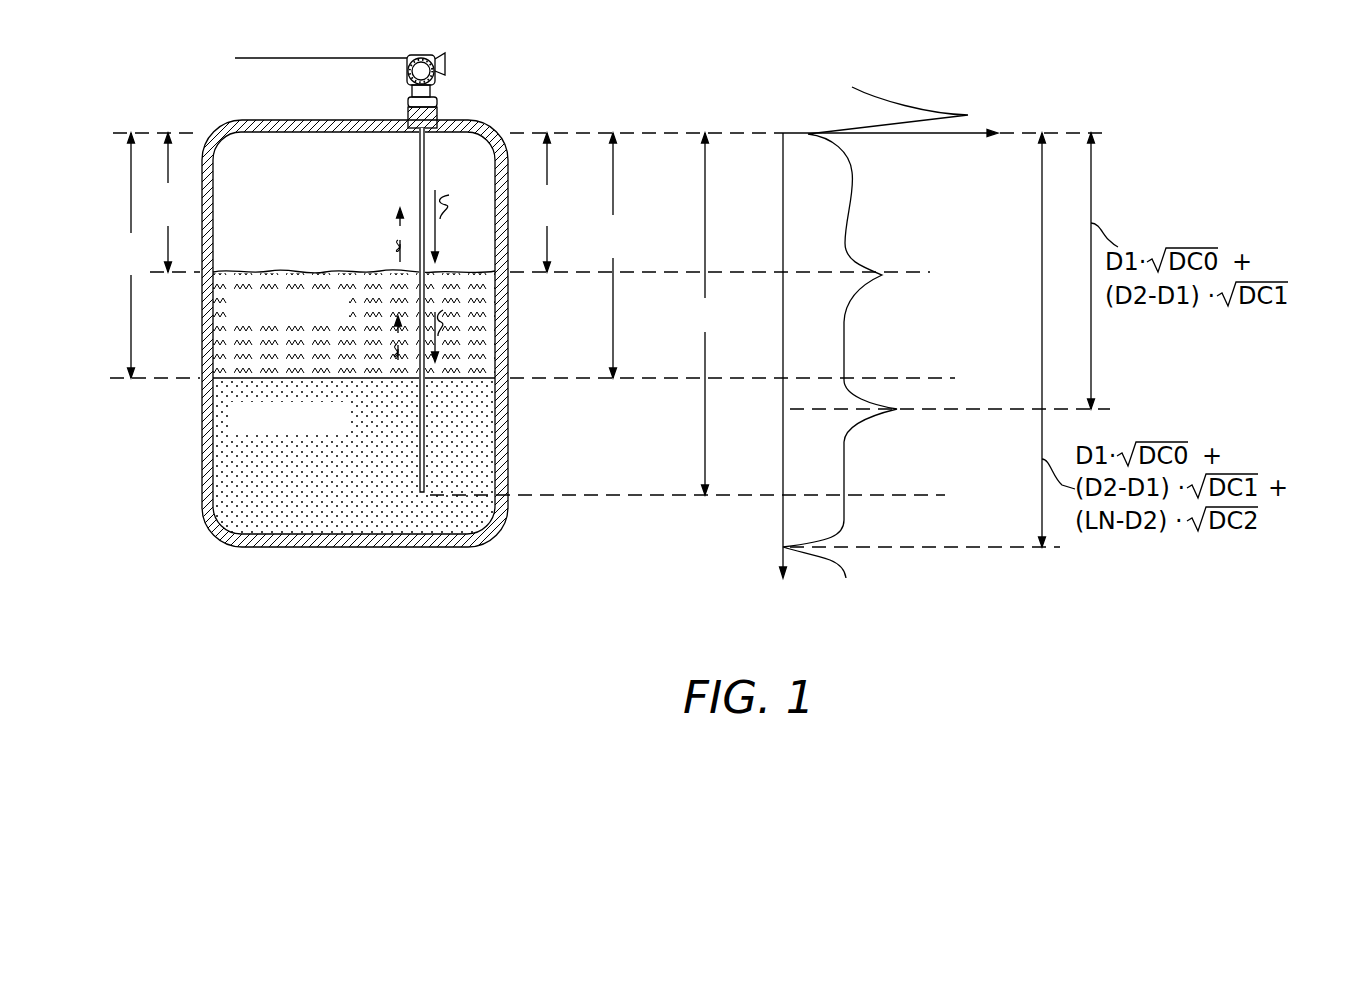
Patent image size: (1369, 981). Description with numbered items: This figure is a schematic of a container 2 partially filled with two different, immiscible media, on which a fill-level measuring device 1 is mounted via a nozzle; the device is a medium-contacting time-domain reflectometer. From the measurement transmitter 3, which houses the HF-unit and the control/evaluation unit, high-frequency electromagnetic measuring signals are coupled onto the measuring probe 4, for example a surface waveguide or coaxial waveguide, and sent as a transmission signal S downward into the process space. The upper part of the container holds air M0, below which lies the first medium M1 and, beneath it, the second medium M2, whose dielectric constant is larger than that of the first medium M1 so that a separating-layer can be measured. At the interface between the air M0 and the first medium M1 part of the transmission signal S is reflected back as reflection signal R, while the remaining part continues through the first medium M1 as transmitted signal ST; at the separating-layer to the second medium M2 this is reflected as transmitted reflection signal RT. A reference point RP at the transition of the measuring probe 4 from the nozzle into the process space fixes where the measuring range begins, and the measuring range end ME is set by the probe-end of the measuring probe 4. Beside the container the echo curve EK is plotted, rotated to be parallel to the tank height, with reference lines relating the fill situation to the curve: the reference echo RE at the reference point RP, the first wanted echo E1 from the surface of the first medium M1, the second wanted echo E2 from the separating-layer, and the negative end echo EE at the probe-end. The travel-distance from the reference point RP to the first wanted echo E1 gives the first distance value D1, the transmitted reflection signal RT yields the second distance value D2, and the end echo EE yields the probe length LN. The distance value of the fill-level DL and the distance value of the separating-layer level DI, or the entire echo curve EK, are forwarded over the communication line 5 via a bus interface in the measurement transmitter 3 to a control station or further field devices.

The fill-level measuring device 1 is at (563, 300).
The container 2 is at (322, 333).
The measurement transmitter 3 is at (428, 76).
The measuring probe 4 is at (418, 180).
The communication line 5 is at (247, 59).
The reference point RP is at (440, 131).
The measuring range end ME is at (426, 498).
The air M0 is at (354, 216).
The first medium M1 is at (345, 317).
The second medium M2 is at (345, 430).
The reflection signal R is at (377, 235).
The transmission signal S is at (455, 225).
The transmitted reflection signal RT is at (374, 347).
The transmitted transmission signal ST is at (454, 337).
The distance value of the separating-layer level DI is at (134, 255).
The distance value of the fill-level DL is at (169, 202).
The first distance value D1 is at (549, 202).
The second distance value D2 is at (615, 255).
The probe length LN is at (703, 314).
The echo curve EK is at (868, 124).
The reference echo RE is at (850, 142).
The first wanted echo E1 is at (880, 293).
The second wanted echo E2 is at (907, 413).
The end echo EE is at (813, 547).